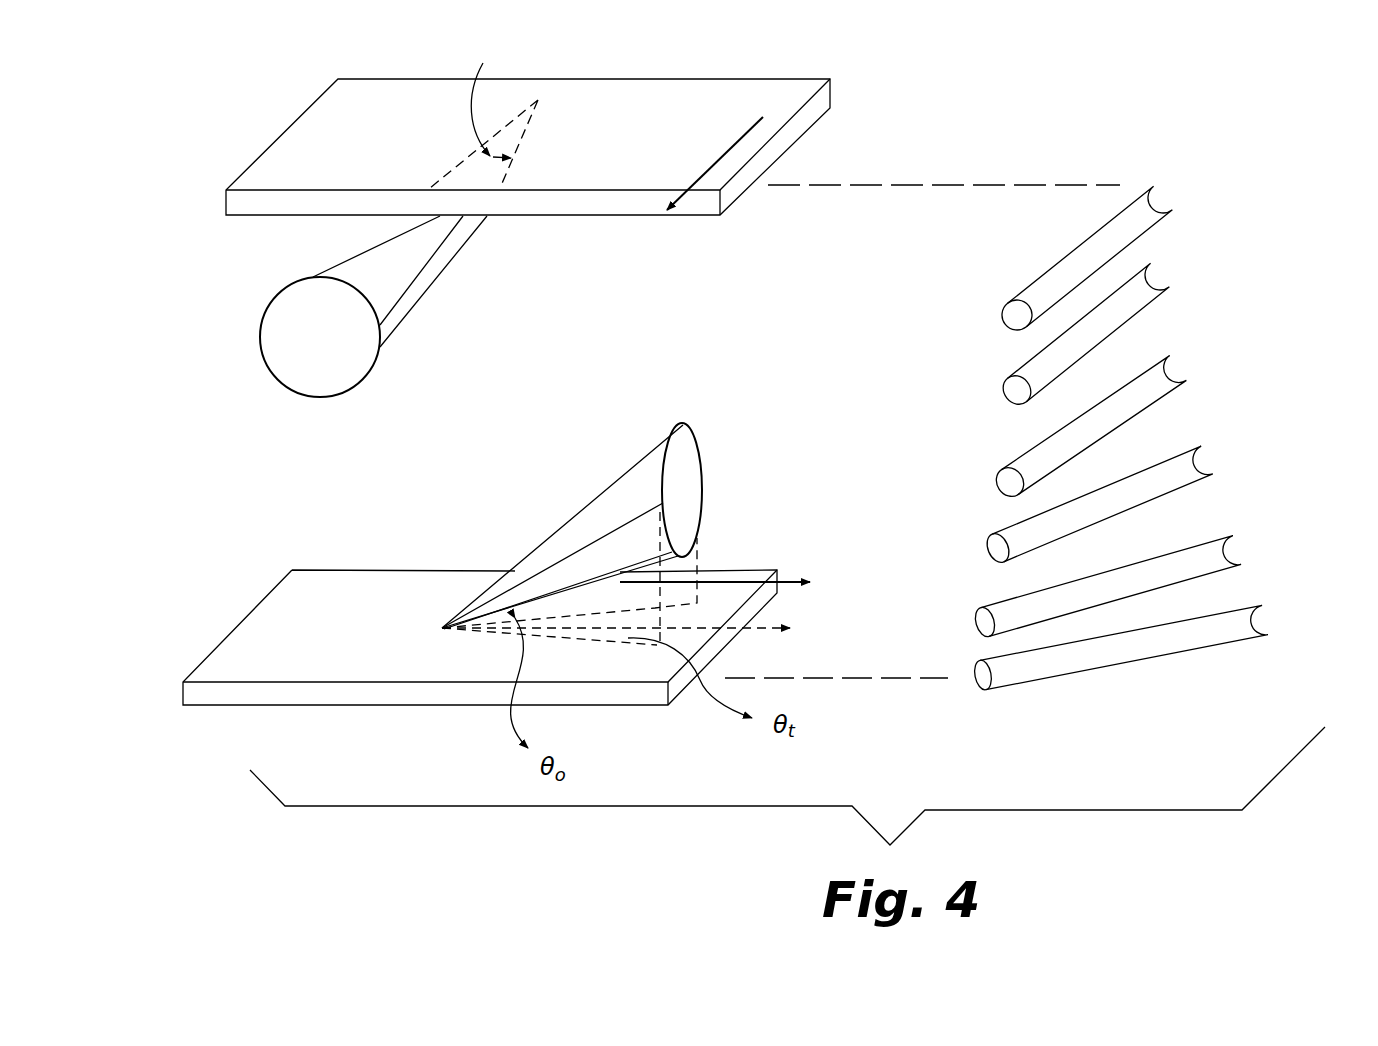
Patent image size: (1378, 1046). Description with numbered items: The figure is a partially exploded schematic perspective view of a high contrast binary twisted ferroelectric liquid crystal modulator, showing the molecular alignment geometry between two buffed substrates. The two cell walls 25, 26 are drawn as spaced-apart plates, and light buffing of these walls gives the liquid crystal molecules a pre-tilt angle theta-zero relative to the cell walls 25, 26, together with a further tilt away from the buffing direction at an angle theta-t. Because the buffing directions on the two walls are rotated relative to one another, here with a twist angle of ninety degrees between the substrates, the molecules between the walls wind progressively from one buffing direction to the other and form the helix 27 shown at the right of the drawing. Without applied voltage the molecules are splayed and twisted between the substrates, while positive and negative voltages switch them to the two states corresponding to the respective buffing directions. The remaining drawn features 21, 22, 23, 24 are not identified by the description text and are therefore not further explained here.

The light source beam 21 is at (287, 307).
The converging light beam 22 is at (658, 448).
The incident beam 23 is at (448, 267).
The transmitted beam 24 is at (537, 572).
The cell wall 25 is at (752, 128).
The cell wall 26 is at (767, 572).
The helix 27 is at (1265, 172).